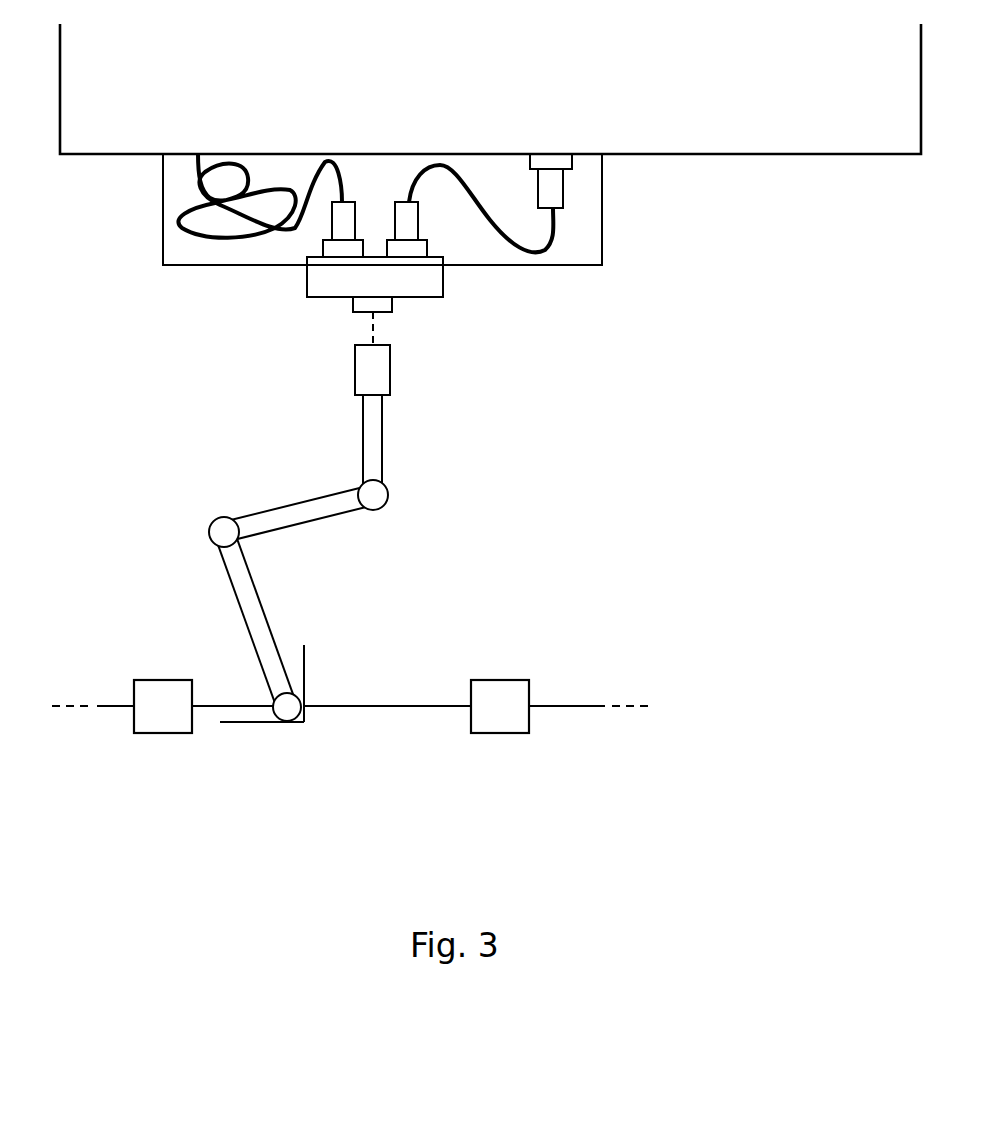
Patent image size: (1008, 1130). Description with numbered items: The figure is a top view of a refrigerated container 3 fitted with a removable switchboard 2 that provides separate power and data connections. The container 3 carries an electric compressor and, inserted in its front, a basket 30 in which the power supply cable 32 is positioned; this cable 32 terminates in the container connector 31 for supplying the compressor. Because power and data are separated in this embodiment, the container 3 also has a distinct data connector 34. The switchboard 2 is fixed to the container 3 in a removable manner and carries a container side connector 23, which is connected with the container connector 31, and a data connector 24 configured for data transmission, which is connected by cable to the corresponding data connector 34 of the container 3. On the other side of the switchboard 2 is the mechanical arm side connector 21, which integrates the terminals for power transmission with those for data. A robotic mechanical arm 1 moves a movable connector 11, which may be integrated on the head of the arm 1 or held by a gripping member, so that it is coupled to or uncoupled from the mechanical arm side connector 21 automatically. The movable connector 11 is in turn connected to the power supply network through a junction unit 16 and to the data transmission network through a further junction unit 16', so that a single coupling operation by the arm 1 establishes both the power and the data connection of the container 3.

The robotic mechanical arm 1 is at (240, 598).
The switchboard 2 is at (445, 287).
The refrigerated container 3 is at (60, 98).
The movable connector 11 is at (357, 380).
The junction unit 16 is at (162, 653).
The junction unit 16' is at (476, 653).
The mechanical arm side connector 21 is at (397, 302).
The container side connector 23 is at (323, 246).
The data connector 24 is at (427, 248).
The basket 30 is at (163, 242).
The connector 31 is at (332, 227).
The power supply cable 32 is at (230, 250).
The data connector 34 is at (572, 162).